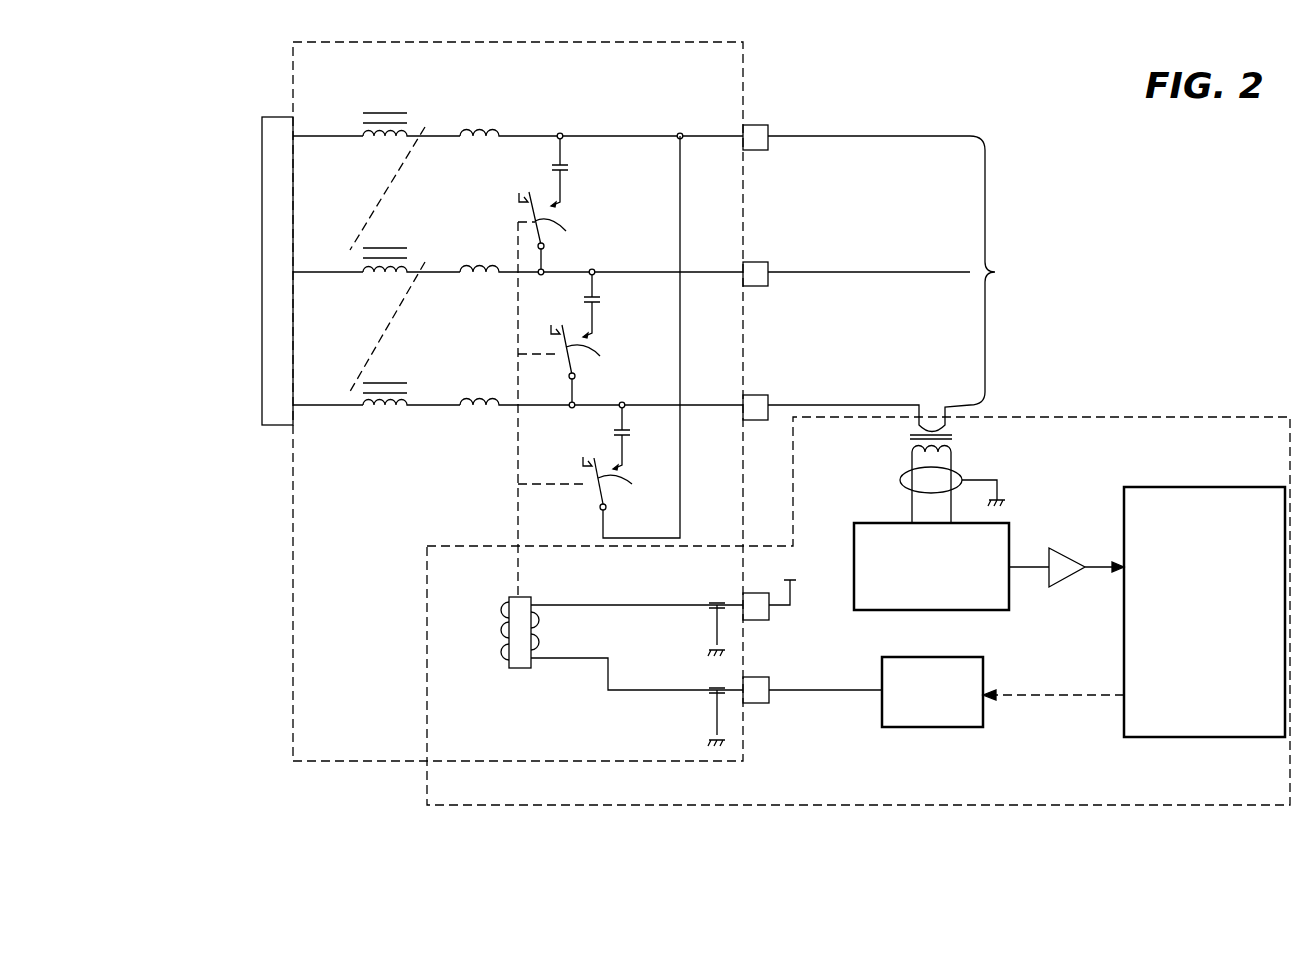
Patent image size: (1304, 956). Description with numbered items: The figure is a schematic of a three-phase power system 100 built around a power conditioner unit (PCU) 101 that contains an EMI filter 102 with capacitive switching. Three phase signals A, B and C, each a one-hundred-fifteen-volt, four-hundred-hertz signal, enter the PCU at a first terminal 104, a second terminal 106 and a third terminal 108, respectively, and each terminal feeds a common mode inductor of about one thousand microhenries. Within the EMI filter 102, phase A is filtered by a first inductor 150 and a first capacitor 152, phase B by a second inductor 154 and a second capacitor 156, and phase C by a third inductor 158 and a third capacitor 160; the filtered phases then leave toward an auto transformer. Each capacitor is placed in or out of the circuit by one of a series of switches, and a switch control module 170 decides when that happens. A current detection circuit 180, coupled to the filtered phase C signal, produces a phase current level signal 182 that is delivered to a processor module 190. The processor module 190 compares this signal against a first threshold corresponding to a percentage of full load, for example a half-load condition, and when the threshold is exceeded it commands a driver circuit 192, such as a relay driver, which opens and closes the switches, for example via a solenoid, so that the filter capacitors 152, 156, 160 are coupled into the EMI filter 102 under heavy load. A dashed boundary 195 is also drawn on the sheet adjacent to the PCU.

The three-phase power system 100 is at (866, 60).
The power conditioner unit 101 is at (731, 77).
The EMI filter 102 is at (449, 217).
The first terminal 104 is at (293, 136).
The second terminal 106 is at (293, 272).
The third terminal 108 is at (293, 405).
The first inductor 150 is at (471, 130).
The first capacitor 152 is at (563, 167).
The second inductor 154 is at (468, 265).
The second capacitor 156 is at (596, 299).
The third inductor 158 is at (472, 398).
The third capacitor 160 is at (618, 433).
The switch control module 170 is at (1290, 449).
The current detection circuit 180 is at (930, 612).
The phase current level signal 182 is at (1098, 565).
The processor module 190 is at (1222, 659).
The driver circuit 192 is at (983, 672).
The PCU boundary / control interface 195 is at (293, 585).